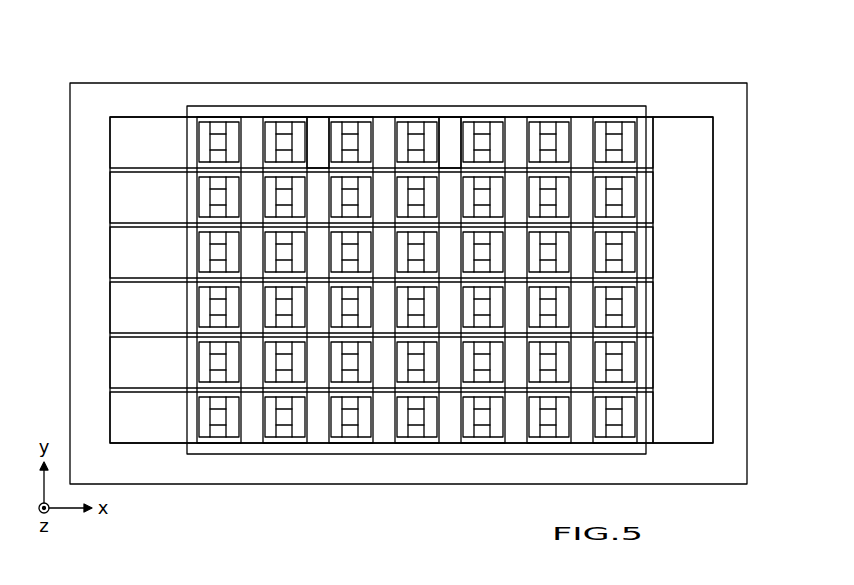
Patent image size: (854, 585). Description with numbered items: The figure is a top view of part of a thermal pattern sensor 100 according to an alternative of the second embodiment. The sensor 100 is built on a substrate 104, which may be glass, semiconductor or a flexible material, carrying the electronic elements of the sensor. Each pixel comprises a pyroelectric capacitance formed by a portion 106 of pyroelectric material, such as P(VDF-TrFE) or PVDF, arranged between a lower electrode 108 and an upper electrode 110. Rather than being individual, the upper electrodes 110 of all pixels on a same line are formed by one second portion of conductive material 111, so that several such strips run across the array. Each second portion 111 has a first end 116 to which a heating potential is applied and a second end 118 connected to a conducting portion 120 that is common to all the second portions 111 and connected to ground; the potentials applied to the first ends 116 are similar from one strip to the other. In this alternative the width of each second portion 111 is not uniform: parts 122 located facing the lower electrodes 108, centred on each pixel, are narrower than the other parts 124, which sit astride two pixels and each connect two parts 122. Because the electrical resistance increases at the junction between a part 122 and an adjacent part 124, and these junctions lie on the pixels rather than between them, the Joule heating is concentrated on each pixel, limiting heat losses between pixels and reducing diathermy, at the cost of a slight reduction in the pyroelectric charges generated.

The thermal pattern sensor 100 is at (425, 277).
The substrate 104 is at (328, 473).
The portion of pyroelectric material 106 is at (615, 112).
The lower electrode 108 is at (545, 128).
The upper electrode 110 is at (208, 118).
The second portion of conductive material 111 is at (317, 130).
The first end 116 is at (120, 140).
The second end 118 is at (654, 142).
The conducting portion 120 is at (690, 202).
The part of second portion 122 is at (286, 140).
The part of second portion 124 is at (448, 128).